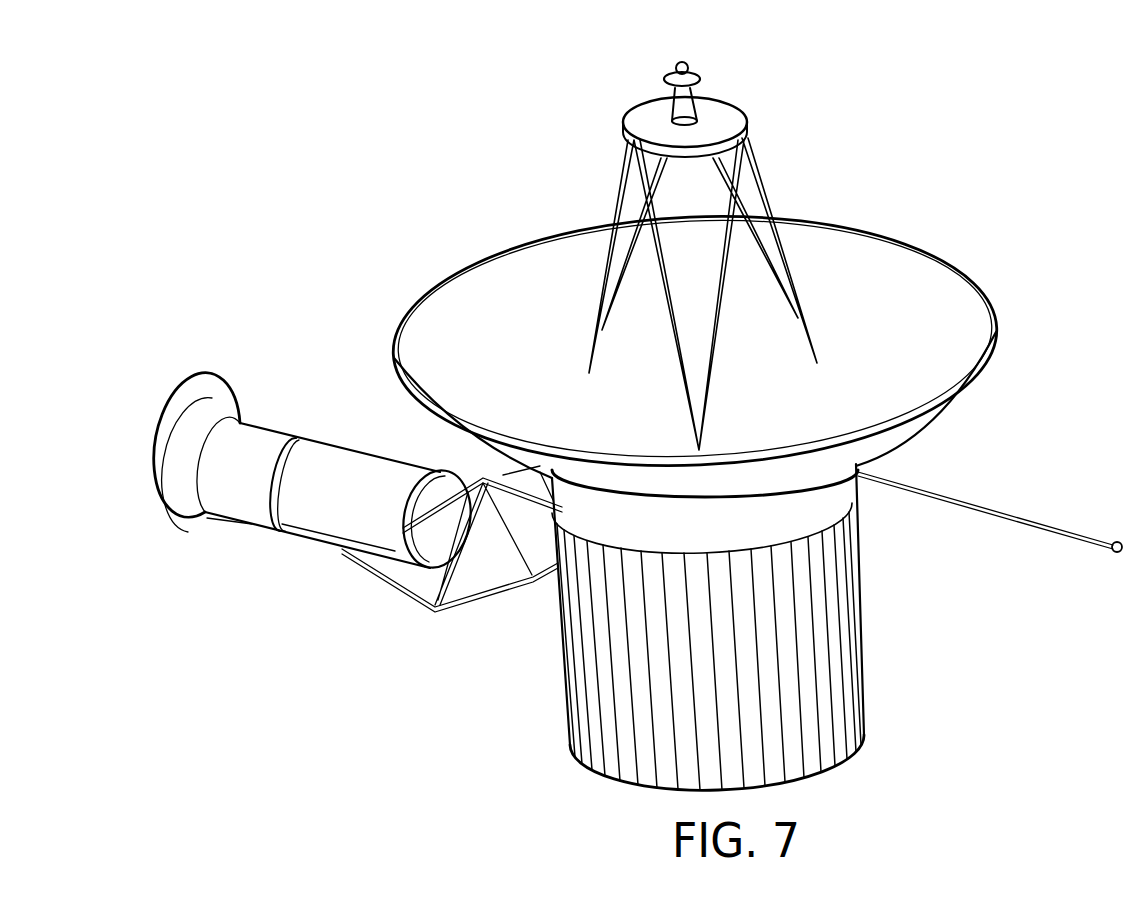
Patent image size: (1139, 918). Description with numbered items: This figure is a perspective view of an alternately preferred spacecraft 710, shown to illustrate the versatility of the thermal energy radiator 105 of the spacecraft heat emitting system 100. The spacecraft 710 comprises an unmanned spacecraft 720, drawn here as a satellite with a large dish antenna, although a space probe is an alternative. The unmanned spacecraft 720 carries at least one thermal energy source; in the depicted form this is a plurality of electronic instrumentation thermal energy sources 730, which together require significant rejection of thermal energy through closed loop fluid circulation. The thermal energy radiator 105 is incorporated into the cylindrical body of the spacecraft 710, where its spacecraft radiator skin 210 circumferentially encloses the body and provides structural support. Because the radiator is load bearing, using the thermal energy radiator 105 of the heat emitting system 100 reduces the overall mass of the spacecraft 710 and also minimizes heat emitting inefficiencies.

The spacecraft 710 is at (1003, 123).
The unmanned spacecraft 720 is at (1018, 277).
The electronic instrumentation thermal energy sources 730 is at (488, 244).
The spacecraft heat emitting system 100 is at (891, 632).
The thermal energy radiator 105 is at (897, 710).
The spacecraft radiator skin 210 is at (562, 665).